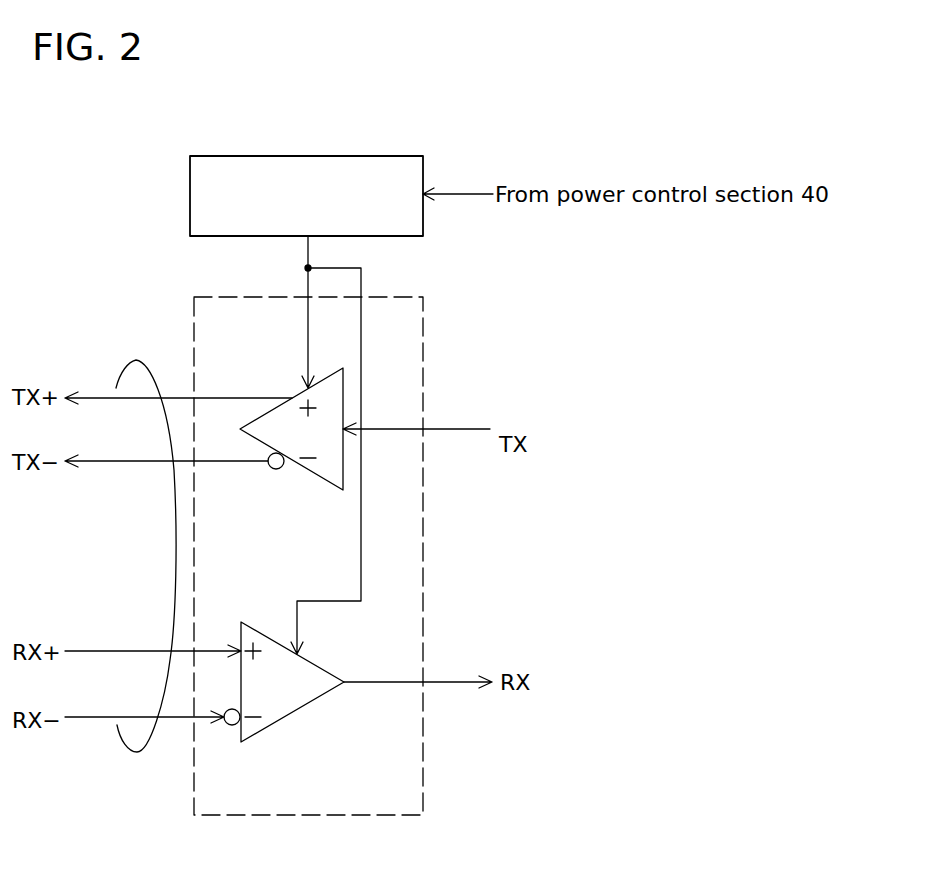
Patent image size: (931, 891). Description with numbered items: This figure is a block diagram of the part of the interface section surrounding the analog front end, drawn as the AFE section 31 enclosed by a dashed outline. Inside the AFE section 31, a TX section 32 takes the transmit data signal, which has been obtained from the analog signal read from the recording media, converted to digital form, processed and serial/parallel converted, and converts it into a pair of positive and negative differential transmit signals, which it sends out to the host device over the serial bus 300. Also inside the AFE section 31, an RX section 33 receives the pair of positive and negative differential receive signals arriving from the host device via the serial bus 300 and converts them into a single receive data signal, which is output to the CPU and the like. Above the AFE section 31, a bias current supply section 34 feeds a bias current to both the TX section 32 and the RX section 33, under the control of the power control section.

The bias current supply section 34 is at (320, 156).
The AFE section 31 is at (423, 368).
The TX section 32 is at (310, 472).
The RX section 33 is at (302, 712).
The serial bus 300 is at (135, 360).